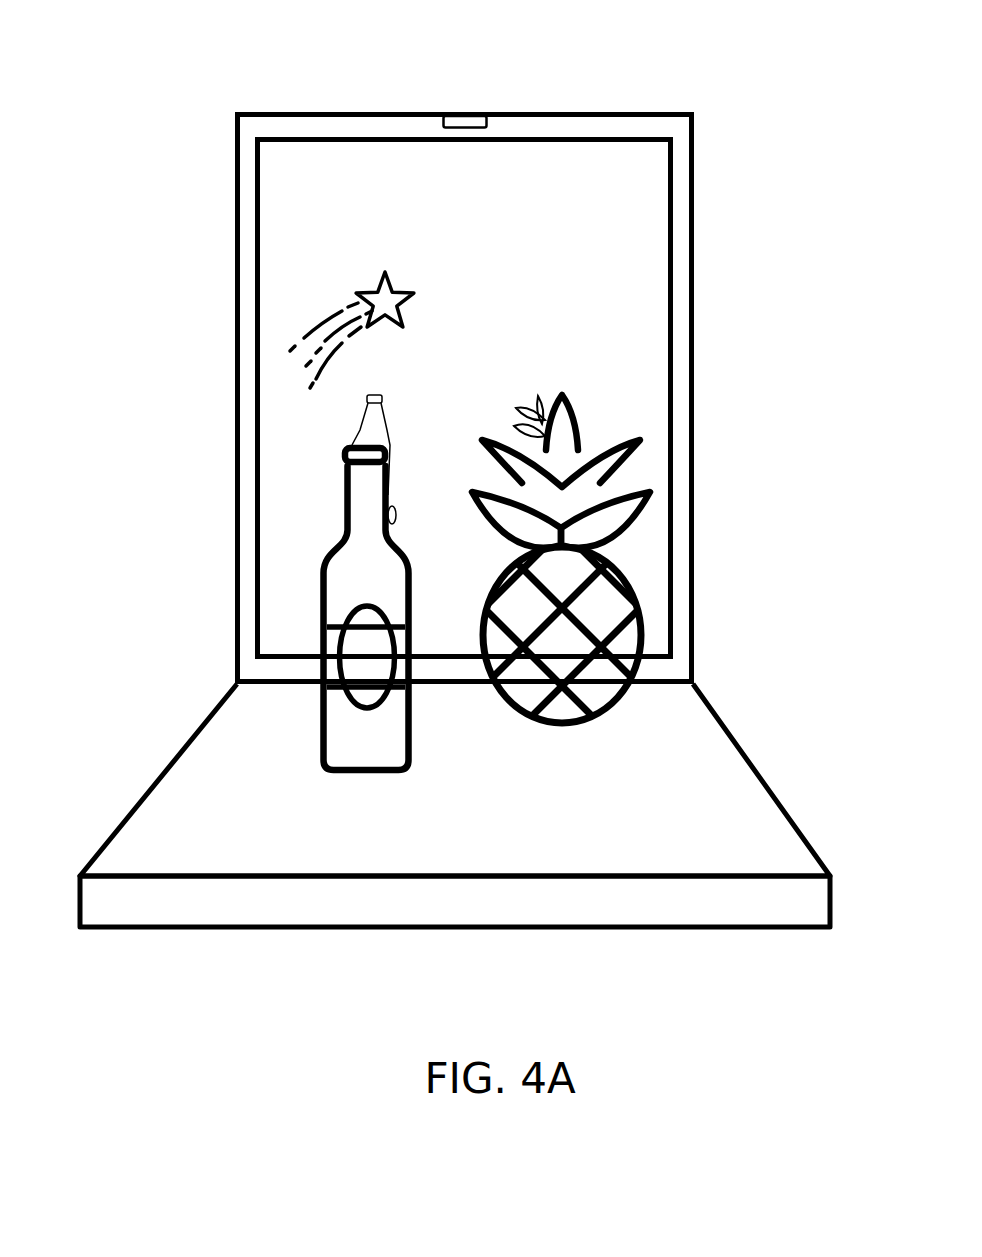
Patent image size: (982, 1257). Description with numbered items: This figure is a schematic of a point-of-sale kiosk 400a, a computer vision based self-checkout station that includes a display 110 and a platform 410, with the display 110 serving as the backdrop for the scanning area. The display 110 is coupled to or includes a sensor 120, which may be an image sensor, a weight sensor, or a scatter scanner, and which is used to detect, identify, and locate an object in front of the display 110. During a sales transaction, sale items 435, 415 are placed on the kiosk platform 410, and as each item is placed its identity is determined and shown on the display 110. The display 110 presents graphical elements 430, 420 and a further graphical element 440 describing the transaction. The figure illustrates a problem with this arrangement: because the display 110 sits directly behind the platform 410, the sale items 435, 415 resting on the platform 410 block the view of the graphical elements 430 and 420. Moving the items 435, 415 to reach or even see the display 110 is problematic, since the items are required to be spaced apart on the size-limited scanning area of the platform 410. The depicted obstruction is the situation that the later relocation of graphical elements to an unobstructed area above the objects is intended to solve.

The point-of-sale kiosk 400a is at (265, 73).
The display 110 is at (693, 158).
The sensor 120 is at (473, 108).
The graphical element 440 is at (337, 225).
The graphical element 430 is at (357, 437).
The sale item 435 is at (333, 585).
The graphical element 420 is at (537, 397).
The sale item 415 is at (625, 572).
The platform 410 is at (712, 760).